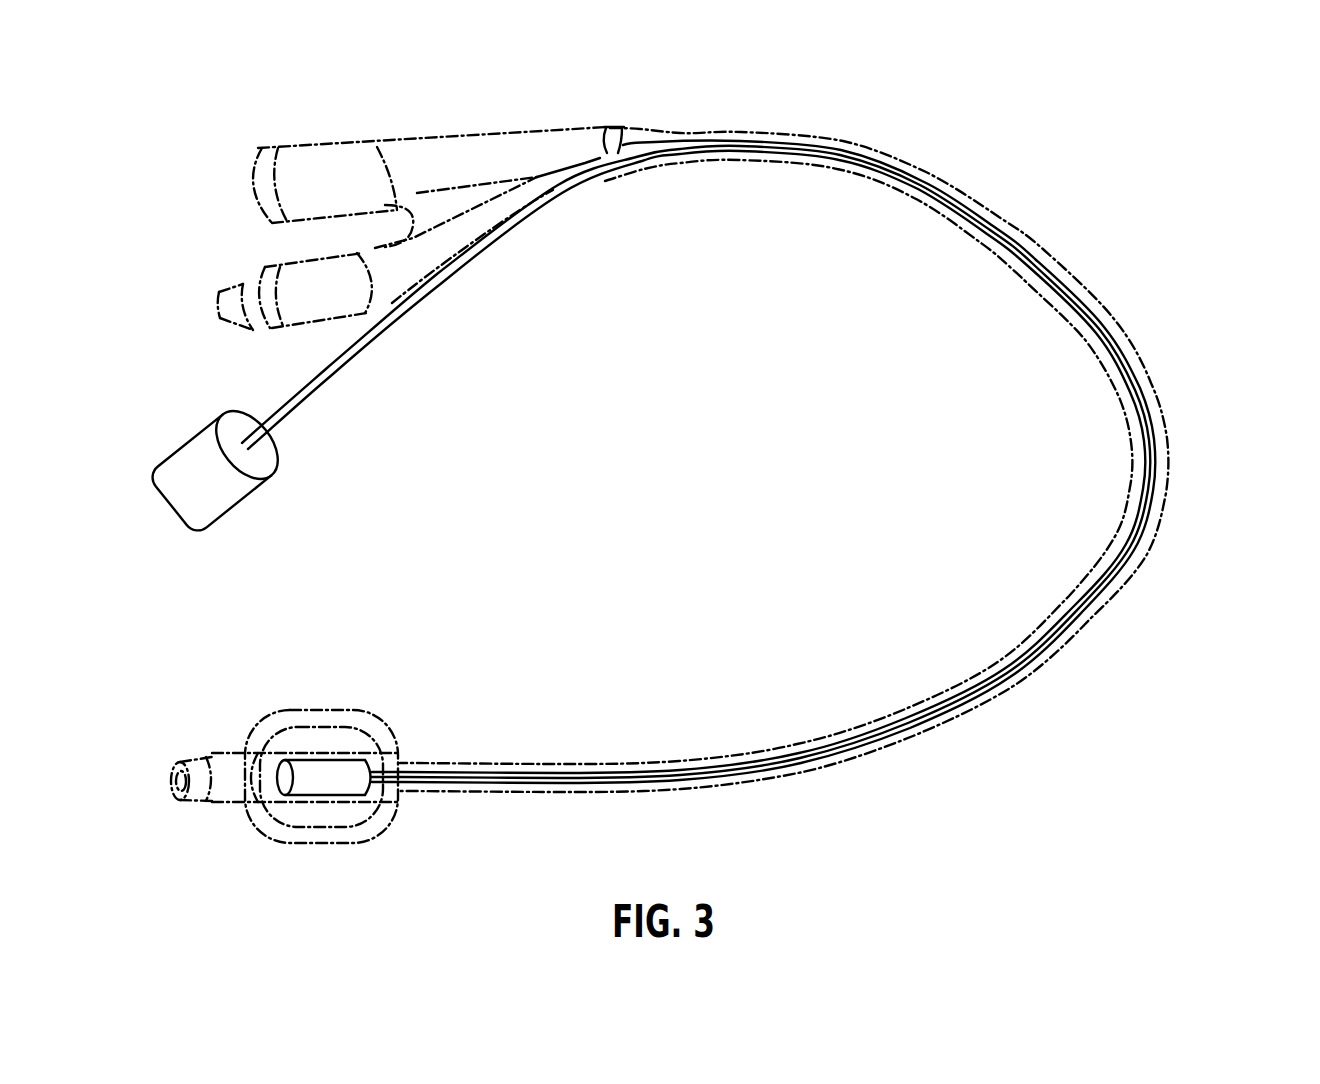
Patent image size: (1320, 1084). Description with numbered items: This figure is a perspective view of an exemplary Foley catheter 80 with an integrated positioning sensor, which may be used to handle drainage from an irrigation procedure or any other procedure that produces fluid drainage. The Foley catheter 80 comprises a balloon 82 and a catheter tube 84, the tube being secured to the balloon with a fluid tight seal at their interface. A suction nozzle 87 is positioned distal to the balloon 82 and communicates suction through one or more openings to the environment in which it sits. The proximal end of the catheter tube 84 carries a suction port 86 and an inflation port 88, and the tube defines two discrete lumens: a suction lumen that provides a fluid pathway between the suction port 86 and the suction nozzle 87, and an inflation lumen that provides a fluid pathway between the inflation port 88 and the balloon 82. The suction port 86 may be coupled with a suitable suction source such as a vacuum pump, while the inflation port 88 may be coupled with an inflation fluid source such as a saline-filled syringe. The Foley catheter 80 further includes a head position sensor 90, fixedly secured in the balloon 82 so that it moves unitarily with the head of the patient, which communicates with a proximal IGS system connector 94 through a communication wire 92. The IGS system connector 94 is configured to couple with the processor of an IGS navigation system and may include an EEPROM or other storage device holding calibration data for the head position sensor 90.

The Foley catheter 80 is at (1188, 206).
The balloon 82 is at (322, 710).
The catheter tube 84 is at (1025, 678).
The suction port 86 is at (268, 262).
The suction nozzle 87 is at (198, 755).
The inflation port 88 is at (325, 145).
The head position sensor 90 is at (350, 762).
The communication wire 92 is at (1105, 335).
The proximal IGS system connector 94 is at (270, 462).